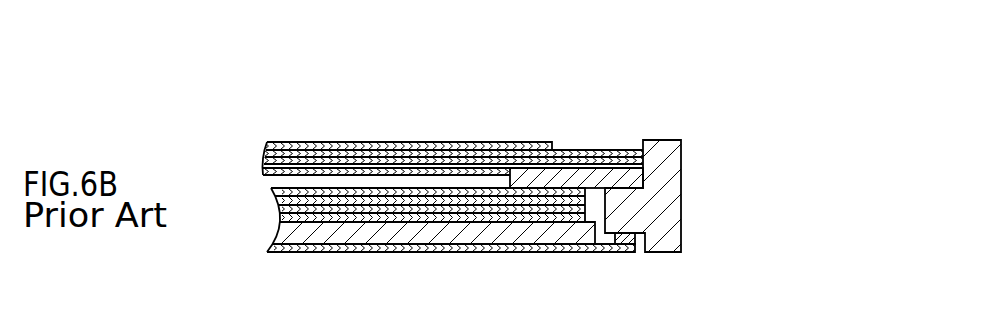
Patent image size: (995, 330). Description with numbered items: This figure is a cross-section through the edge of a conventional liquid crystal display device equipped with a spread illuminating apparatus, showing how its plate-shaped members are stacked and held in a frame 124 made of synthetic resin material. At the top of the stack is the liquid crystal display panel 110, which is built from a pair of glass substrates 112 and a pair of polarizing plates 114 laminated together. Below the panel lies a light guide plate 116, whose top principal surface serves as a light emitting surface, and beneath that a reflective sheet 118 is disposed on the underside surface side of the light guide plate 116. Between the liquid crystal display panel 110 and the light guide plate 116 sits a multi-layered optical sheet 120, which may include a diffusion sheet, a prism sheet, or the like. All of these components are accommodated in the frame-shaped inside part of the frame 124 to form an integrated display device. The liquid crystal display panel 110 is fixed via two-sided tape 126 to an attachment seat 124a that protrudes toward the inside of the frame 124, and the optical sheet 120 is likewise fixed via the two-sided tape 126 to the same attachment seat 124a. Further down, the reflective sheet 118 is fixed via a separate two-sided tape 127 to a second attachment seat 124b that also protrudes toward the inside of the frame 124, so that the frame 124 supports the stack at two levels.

The liquid crystal display panel 110 is at (478, 135).
The glass substrate 112 is at (308, 162).
The polarizing plate 114 is at (405, 145).
The light guide plate 116 is at (417, 238).
The reflective sheet 118 is at (483, 247).
The optical sheet 120 is at (500, 180).
The frame 124 is at (670, 253).
The attachment seat 124a is at (623, 167).
The attachment seat 124b is at (637, 253).
The two-sided tape 126 is at (590, 150).
The two-sided tape 127 is at (612, 252).